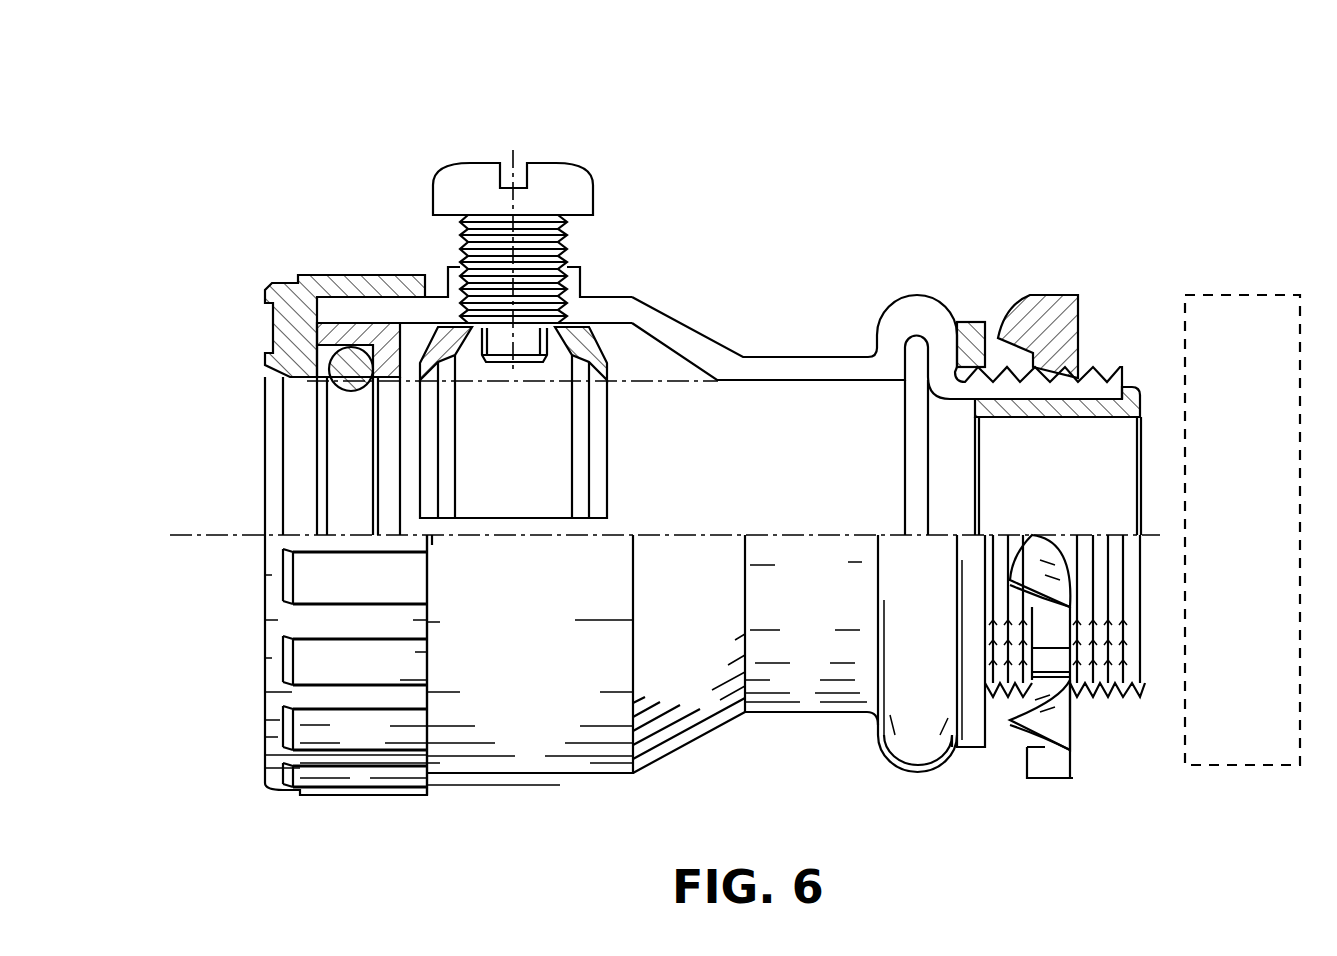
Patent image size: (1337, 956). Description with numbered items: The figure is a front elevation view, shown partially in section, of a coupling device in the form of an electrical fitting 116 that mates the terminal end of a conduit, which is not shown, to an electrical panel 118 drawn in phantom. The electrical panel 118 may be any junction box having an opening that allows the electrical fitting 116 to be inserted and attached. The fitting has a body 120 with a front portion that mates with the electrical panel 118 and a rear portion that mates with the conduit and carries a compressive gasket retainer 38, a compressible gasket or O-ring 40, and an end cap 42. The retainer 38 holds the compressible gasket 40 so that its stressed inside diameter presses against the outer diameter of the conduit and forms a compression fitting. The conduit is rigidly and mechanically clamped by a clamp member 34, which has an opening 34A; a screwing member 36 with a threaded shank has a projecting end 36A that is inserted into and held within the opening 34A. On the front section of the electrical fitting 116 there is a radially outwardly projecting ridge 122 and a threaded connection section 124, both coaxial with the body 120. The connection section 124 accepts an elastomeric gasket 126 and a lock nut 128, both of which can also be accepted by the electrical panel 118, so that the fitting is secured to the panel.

The electrical fitting 116 is at (1016, 145).
The screwing member 36 is at (577, 192).
The projecting end 36A is at (533, 350).
The clamp member 34 is at (613, 326).
The opening 34A is at (472, 353).
The compressive gasket retainer 38 is at (390, 333).
The compressible gasket 40 is at (338, 375).
The end cap 42 is at (333, 275).
The electrical panel 118 is at (1253, 293).
The body 120 is at (743, 357).
The radially outwardly projecting ridge 122 is at (918, 300).
The connection section 124 is at (1097, 363).
The elastomeric gasket 126 is at (973, 747).
The lock nut 128 is at (1073, 767).